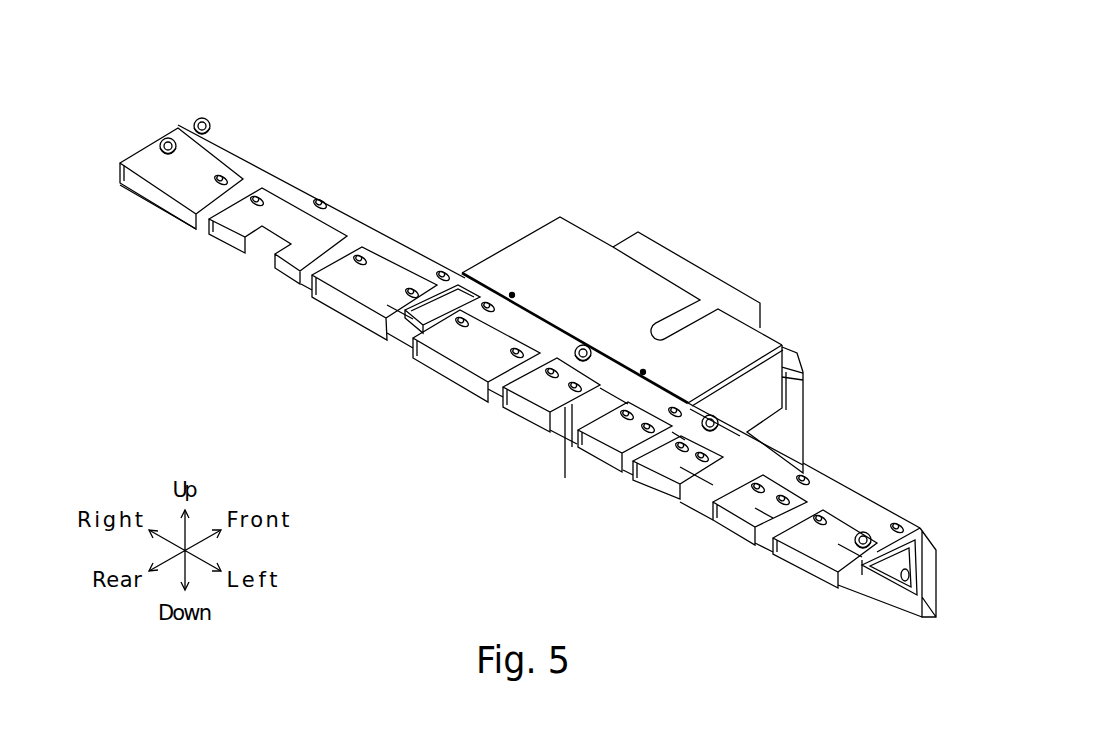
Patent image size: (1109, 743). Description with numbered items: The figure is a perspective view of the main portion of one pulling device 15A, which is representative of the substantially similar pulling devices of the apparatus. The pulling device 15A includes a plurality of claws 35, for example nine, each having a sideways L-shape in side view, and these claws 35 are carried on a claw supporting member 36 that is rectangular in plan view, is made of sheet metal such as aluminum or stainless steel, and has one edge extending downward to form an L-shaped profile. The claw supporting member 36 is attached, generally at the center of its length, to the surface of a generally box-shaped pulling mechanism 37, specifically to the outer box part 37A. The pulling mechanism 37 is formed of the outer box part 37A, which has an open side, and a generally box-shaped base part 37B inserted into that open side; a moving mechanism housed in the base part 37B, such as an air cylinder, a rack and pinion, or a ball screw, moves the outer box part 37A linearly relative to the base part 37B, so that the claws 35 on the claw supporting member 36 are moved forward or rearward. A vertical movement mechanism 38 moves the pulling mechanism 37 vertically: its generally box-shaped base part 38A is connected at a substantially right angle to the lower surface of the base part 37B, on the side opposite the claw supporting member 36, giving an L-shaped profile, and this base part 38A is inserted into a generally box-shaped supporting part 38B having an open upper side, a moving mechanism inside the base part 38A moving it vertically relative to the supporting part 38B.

The pulling device 15A is at (405, 150).
The claws 35 is at (243, 218).
The claw supporting member 36 is at (857, 510).
The pulling mechanism 37 is at (583, 253).
The outer box part 37A is at (530, 260).
The base part 37B is at (685, 273).
The vertical movement mechanism 38 is at (808, 390).
The base part 38A is at (799, 365).
The supporting part 38B is at (790, 423).